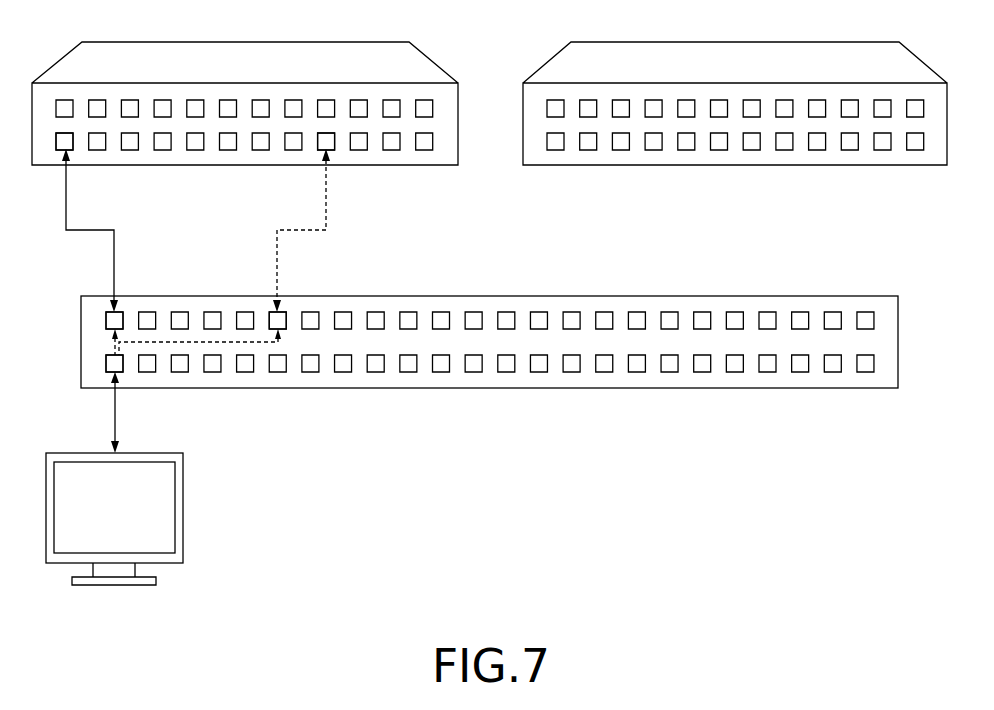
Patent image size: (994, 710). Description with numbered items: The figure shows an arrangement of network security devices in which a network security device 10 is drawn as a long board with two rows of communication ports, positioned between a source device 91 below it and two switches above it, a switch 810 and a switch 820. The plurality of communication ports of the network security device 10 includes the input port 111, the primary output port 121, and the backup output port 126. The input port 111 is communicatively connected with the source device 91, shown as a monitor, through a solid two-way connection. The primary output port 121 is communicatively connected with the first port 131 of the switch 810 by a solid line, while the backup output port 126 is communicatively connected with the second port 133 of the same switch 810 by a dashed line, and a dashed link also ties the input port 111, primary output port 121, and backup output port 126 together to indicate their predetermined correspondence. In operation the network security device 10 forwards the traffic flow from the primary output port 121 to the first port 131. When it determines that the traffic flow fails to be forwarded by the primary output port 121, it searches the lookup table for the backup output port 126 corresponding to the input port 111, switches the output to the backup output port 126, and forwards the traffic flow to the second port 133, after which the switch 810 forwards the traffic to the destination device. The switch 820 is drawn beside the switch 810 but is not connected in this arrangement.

The switch 810 is at (244, 48).
The switch 820 is at (735, 46).
The network security device 10 is at (490, 302).
The first port 131 is at (73, 144).
The second port 133 is at (335, 144).
The primary output port 121 is at (106, 322).
The backup output port 126 is at (287, 318).
The input port 111 is at (106, 365).
The source device 91 is at (183, 507).